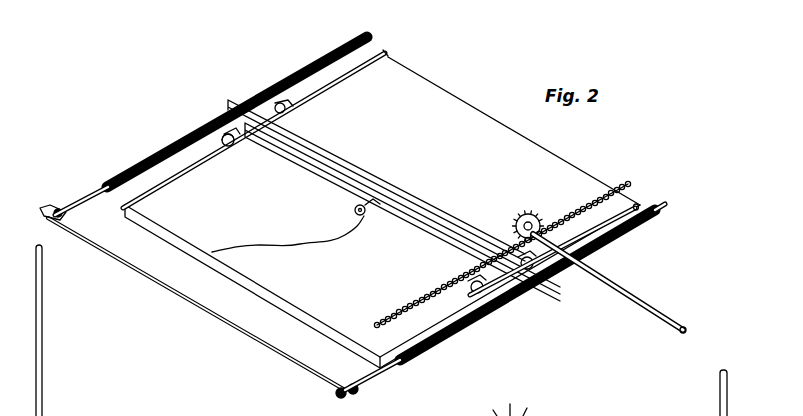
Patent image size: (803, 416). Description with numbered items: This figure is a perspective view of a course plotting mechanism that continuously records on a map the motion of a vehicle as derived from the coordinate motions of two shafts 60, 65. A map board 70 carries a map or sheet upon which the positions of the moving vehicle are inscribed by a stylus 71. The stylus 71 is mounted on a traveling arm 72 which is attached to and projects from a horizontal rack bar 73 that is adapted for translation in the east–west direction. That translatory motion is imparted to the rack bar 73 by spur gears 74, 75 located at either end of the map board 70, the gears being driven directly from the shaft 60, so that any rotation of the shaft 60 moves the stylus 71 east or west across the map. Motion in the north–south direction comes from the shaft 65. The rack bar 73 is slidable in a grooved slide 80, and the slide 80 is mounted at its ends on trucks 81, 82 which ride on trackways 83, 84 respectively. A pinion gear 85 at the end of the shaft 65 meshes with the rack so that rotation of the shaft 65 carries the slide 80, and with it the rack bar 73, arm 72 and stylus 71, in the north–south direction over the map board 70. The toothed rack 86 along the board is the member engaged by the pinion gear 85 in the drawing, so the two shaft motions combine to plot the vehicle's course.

The shaft 60 is at (38, 206).
The shaft 65 is at (627, 292).
The map board 70 is at (533, 157).
The stylus 71 is at (363, 224).
The traveling arm 72 is at (373, 210).
The rack bar 73 is at (233, 99).
The spur gear 74 is at (148, 160).
The spur gear 75 is at (450, 340).
The grooved slide 80 is at (410, 163).
The truck 81 is at (292, 108).
The truck 82 is at (493, 312).
The trackway 83 is at (165, 187).
The trackway 84 is at (640, 208).
The pinion gear 85 is at (528, 214).
The rack 86 is at (627, 181).